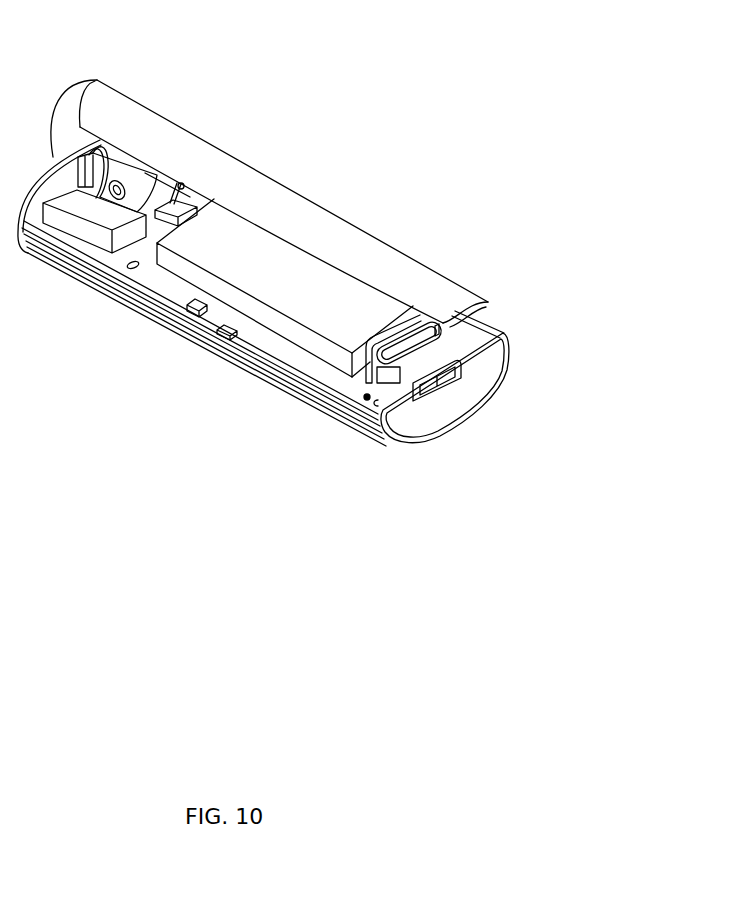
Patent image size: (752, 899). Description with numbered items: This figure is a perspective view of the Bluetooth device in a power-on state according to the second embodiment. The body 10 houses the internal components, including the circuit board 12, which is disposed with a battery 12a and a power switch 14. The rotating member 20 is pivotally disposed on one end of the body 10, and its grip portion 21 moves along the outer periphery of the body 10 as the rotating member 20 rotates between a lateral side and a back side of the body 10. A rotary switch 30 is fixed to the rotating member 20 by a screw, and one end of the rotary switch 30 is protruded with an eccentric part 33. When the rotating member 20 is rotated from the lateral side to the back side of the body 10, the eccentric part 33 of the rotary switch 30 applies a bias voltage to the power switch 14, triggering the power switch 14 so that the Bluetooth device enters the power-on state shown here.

The body 10 is at (468, 398).
The circuit board 12 is at (290, 356).
The battery 12a is at (367, 307).
The power switch 14 is at (163, 217).
The rotating member 20 is at (107, 87).
The grip portion 21 is at (252, 190).
The rotary switch 30 is at (132, 167).
The eccentric part 33 is at (183, 190).